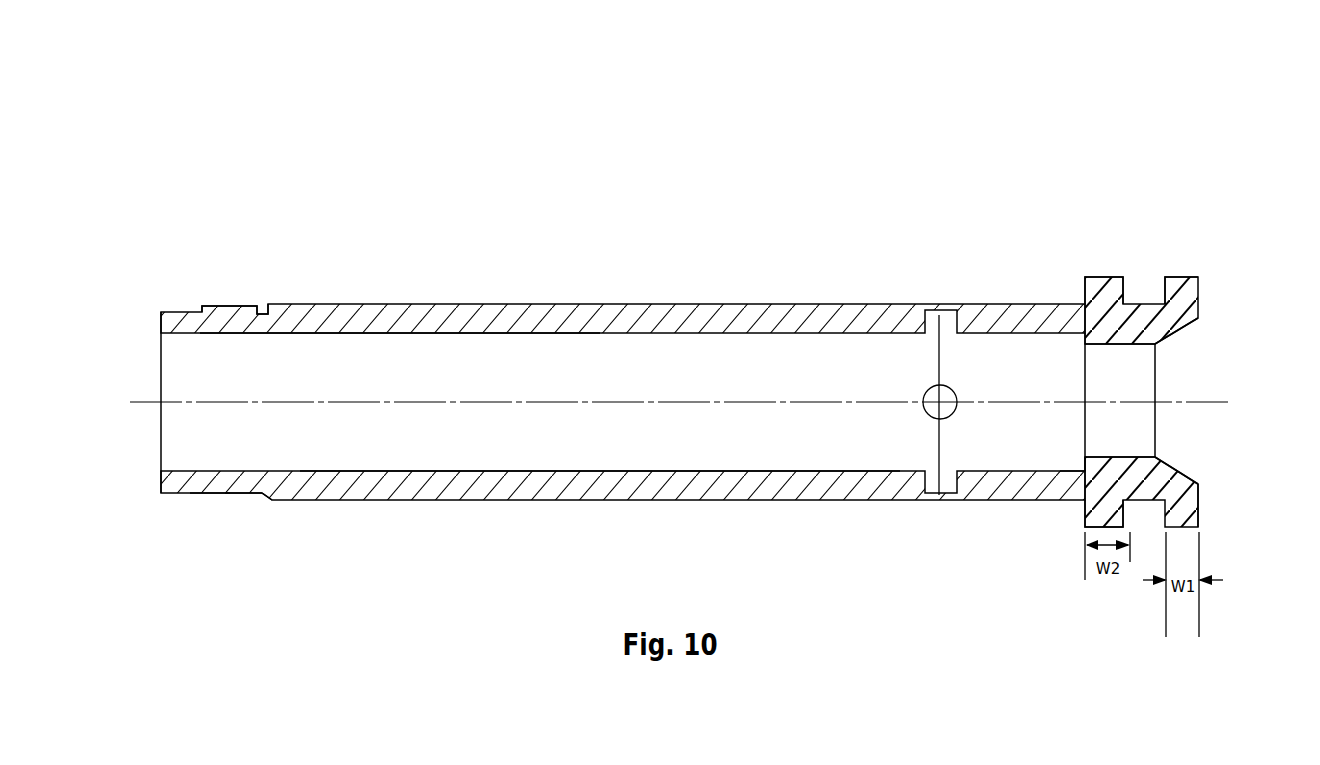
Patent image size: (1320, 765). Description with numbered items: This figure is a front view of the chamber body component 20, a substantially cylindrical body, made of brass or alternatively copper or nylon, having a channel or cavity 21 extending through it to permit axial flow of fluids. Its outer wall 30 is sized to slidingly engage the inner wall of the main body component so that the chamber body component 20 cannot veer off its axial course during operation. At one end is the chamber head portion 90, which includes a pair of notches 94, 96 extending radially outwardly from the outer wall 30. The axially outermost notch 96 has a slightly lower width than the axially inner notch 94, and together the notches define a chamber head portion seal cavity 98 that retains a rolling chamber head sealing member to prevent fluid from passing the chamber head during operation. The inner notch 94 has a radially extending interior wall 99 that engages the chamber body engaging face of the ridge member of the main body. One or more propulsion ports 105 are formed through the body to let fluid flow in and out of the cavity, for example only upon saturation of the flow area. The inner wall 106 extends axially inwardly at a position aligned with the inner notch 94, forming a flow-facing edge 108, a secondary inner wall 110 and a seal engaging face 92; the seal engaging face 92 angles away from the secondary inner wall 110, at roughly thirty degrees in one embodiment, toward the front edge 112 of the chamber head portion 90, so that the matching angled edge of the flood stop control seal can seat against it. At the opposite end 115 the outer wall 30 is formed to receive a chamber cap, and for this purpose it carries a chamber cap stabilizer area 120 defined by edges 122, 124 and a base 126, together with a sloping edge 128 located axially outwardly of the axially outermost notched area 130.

The chamber body component 20 is at (610, 118).
The channel or cavity 21 is at (1110, 370).
The outer wall 30 is at (577, 302).
The chamber head portion 90 is at (1243, 545).
The seal engaging face 92 is at (1170, 480).
The axially inner notch 94 is at (1107, 288).
The axially outermost notch 96 is at (1188, 288).
The chamber head portion seal cavity 98 is at (1148, 296).
The radially extending interior wall 99 is at (1086, 515).
The propulsion port 105 is at (927, 415).
The inner wall 106 is at (485, 465).
The flow-facing edge 108 is at (1080, 463).
The secondary inner wall 110 is at (1105, 462).
The front edge 112 is at (1203, 497).
The end 115 is at (347, 435).
The chamber cap stabilizer area 120 is at (257, 313).
The edge 122 is at (233, 497).
The edge 124 is at (273, 496).
The base 126 is at (253, 497).
The sloping edge 128 is at (198, 497).
The axially outermost notched area 130 is at (218, 502).